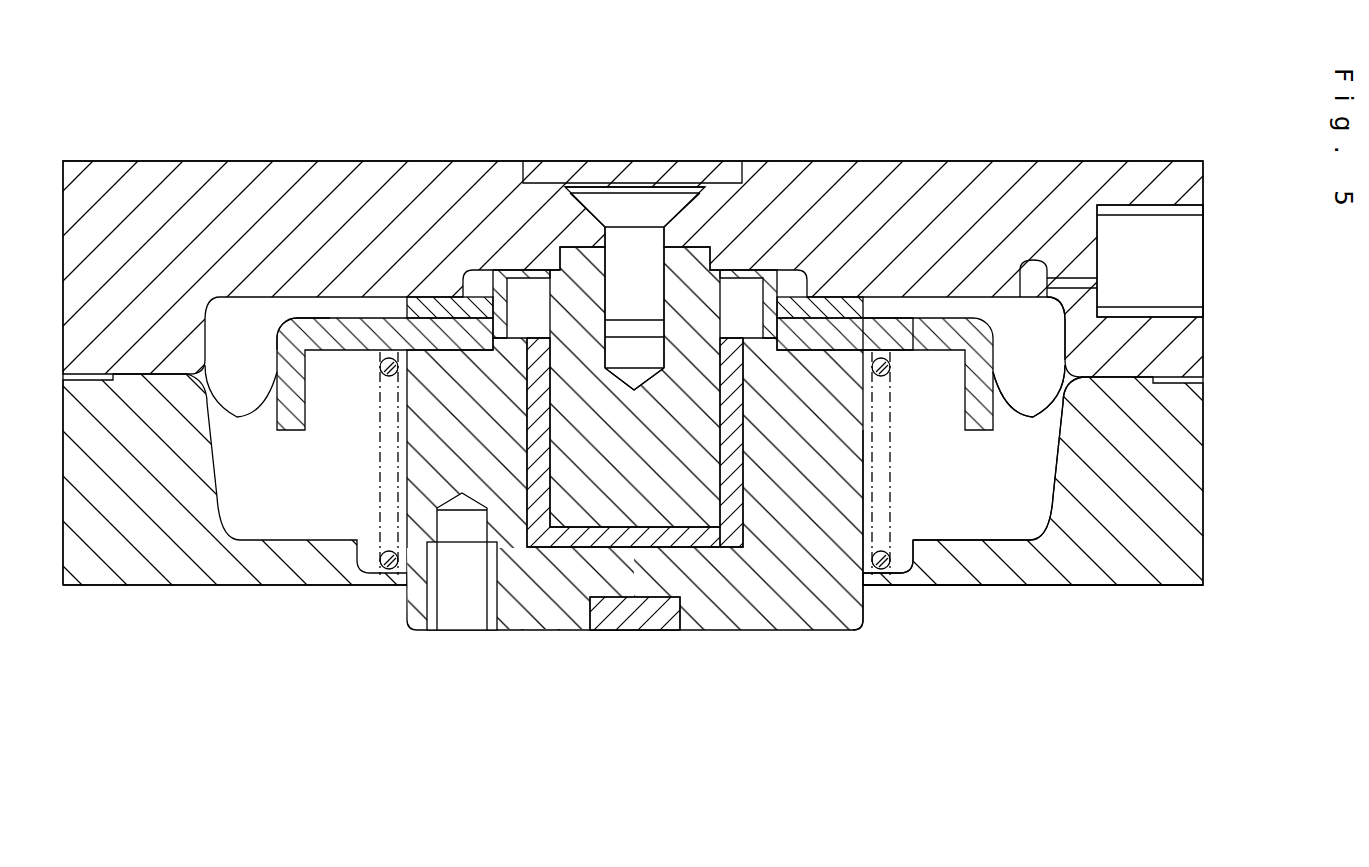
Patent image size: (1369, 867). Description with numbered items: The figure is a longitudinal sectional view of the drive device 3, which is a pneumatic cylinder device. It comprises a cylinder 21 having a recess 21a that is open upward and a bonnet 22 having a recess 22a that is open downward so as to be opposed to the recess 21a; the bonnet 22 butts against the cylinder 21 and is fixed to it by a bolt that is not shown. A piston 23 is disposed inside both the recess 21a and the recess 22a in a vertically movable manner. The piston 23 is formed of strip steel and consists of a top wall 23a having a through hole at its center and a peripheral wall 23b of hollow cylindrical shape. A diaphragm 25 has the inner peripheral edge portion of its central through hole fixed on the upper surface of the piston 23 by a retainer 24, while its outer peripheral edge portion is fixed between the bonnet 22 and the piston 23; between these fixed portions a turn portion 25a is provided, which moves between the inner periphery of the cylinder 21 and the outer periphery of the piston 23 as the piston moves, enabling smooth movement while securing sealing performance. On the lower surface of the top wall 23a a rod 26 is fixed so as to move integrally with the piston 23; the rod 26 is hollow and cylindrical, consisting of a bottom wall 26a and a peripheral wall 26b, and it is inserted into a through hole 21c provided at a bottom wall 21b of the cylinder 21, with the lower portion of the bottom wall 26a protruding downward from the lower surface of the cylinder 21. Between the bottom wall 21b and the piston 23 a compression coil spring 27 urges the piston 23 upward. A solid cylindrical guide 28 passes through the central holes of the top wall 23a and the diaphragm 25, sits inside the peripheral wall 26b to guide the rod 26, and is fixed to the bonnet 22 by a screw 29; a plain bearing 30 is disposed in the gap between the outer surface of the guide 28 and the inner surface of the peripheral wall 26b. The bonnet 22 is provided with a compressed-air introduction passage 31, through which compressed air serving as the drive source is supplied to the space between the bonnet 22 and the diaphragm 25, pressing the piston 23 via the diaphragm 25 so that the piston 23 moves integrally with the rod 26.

The drive device 3 is at (1250, 207).
The cylinder 21 is at (1205, 548).
The recess 21a is at (1030, 490).
The bottom wall 21b is at (975, 560).
The through hole 21c is at (850, 580).
The bonnet 22 is at (1120, 175).
The recess 22a is at (1040, 352).
The piston 23 is at (938, 340).
The top wall 23a is at (388, 338).
The peripheral wall 23b is at (285, 318).
The retainer 24 is at (800, 335).
The diaphragm 25 is at (878, 345).
The turn portion 25a is at (1035, 432).
The rod 26 is at (752, 600).
The bottom wall 26a is at (702, 633).
The peripheral wall 26b is at (807, 483).
The compression coil spring 27 is at (388, 582).
The guide 28 is at (565, 305).
The screw 29 is at (635, 205).
The plain bearing 30 is at (545, 500).
The compressed-air introduction passage 31 is at (1180, 258).